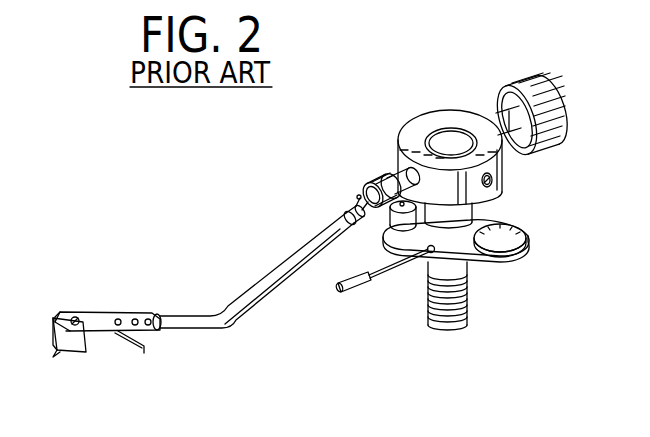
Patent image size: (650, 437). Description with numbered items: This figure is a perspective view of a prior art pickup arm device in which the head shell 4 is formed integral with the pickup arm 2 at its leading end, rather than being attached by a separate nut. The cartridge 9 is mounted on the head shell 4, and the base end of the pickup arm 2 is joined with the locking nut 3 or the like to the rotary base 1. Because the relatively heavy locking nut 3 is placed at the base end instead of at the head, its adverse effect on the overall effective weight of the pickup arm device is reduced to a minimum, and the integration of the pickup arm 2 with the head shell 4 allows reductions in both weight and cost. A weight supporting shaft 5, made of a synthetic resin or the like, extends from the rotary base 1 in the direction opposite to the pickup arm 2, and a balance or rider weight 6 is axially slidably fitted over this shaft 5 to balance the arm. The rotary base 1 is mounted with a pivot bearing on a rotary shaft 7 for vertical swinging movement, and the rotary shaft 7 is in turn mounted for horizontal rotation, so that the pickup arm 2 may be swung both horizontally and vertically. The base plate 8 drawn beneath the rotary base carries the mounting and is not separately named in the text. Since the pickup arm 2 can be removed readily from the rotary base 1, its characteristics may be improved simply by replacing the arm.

The rotary base 1 is at (424, 125).
The pickup arm 2 is at (242, 305).
The locking nut 3 is at (374, 184).
The head shell 4 is at (126, 313).
The weight supporting shaft 5 is at (490, 116).
The balance weight 6 is at (545, 88).
The rotary shaft 7 is at (450, 140).
The base plate 8 is at (470, 222).
The cartridge 9 is at (74, 352).